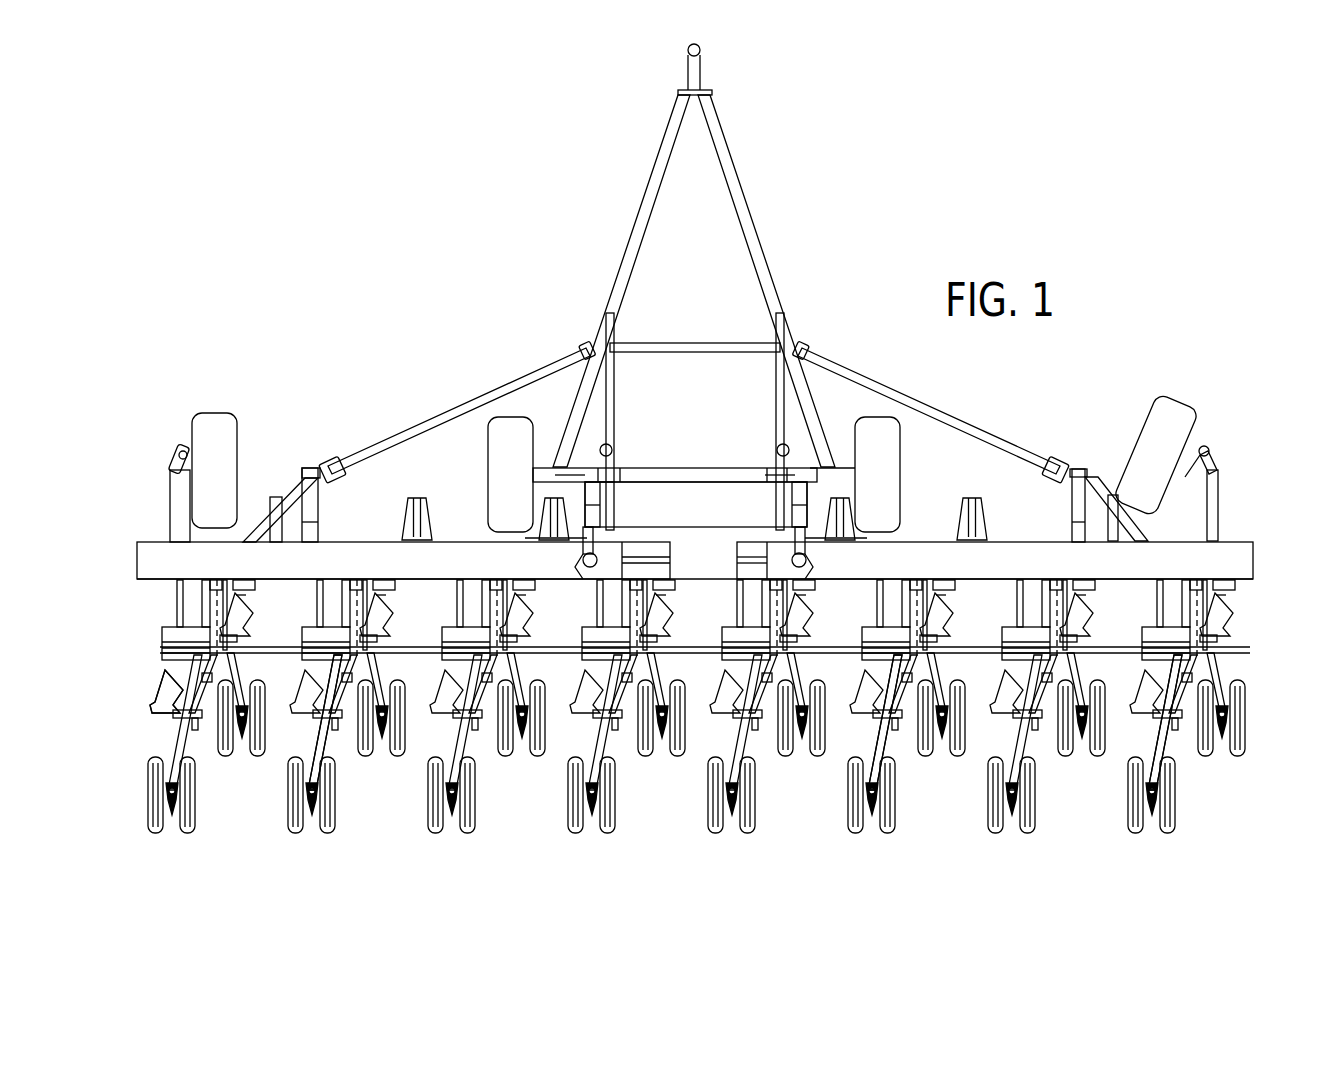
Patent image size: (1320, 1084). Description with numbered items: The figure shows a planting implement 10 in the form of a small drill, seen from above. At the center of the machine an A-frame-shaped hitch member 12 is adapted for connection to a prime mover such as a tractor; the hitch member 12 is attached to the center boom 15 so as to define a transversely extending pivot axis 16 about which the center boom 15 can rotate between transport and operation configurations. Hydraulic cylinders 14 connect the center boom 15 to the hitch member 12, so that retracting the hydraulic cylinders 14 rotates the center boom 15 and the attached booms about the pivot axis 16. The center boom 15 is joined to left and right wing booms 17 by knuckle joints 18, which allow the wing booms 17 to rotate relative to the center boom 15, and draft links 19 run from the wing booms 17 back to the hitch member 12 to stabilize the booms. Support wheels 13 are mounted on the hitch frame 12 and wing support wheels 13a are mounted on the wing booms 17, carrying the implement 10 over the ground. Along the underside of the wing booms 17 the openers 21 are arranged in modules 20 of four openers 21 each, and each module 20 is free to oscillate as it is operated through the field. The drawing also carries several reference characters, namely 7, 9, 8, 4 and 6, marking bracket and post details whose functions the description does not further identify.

The implement 10 is at (422, 252).
The hitch member 12 is at (648, 192).
The wing support wheels 13a is at (211, 412).
The mounting bracket 7 is at (278, 497).
The support wheels 13 is at (497, 440).
The brace post 9 is at (587, 465).
The hydraulic cylinders 14 is at (768, 410).
The center boom 15 is at (692, 500).
The pivot axis 16 is at (822, 467).
The draft links 19 is at (933, 401).
The standoff bracket 8 is at (972, 498).
The wheel arm 4 is at (1210, 448).
The knuckle joints 18 is at (792, 552).
The wing booms 17 is at (137, 555).
The openers 21 is at (155, 692).
The shank 6 is at (262, 660).
The modules 20 is at (315, 849).